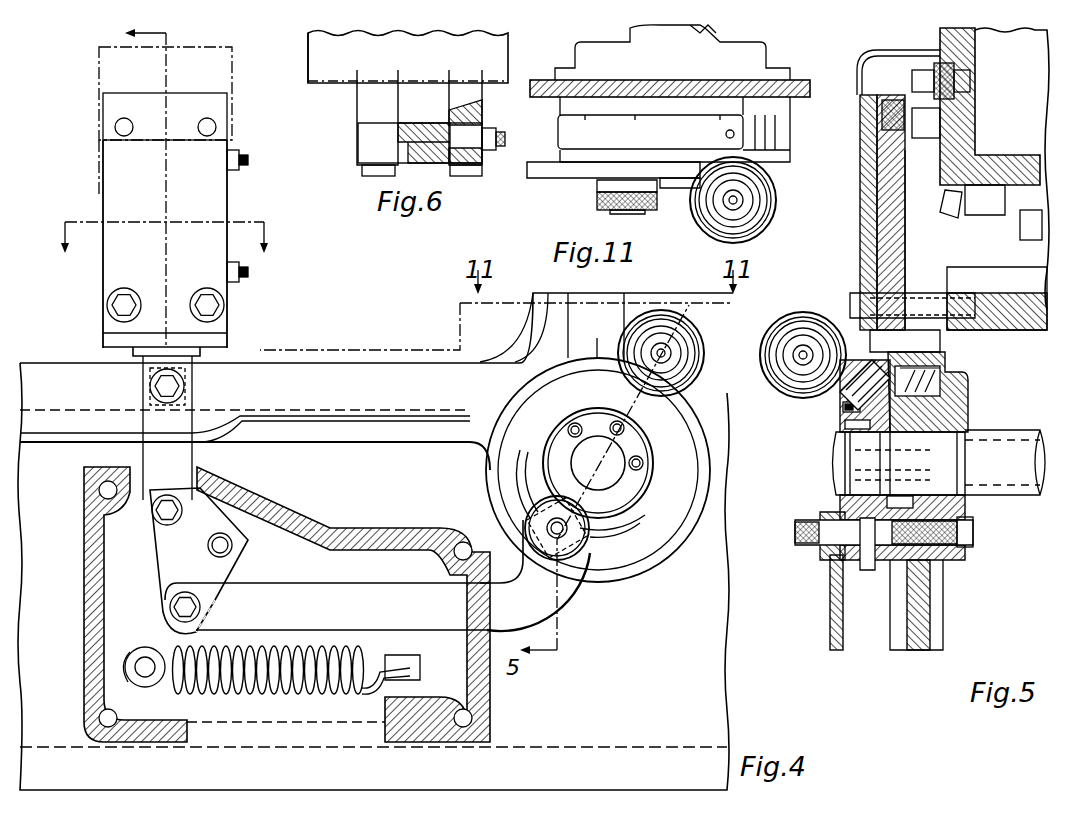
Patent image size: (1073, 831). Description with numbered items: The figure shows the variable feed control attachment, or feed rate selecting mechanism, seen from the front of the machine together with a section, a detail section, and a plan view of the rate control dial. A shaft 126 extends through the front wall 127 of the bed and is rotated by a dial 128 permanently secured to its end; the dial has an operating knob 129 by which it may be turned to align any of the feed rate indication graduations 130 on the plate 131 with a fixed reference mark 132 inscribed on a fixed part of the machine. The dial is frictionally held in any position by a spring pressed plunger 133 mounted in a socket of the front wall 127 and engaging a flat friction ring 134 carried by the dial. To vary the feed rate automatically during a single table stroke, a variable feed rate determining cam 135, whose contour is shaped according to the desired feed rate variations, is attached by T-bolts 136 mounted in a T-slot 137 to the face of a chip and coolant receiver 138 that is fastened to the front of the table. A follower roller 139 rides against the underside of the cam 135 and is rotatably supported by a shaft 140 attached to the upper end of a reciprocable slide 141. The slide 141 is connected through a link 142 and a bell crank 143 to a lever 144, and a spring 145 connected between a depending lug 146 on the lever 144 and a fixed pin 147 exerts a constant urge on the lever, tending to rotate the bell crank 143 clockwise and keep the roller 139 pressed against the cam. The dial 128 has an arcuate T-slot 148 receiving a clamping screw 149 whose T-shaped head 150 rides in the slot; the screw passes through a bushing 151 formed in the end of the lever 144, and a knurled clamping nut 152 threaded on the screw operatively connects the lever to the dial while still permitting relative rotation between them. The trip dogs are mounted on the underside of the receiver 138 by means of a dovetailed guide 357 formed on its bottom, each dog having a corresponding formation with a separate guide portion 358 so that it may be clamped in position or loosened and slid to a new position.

In FIG. 4, the shaft 126 is at (612, 478).
In FIG. 11, the shaft 126 is at (720, 30).
In FIG. 5, the shaft 126 is at (1020, 420).
In FIG. 5, the front wall 127 is at (925, 620).
In FIG. 4, the dial 128 is at (604, 558).
In FIG. 11, the dial 128 is at (775, 138).
In FIG. 5, the dial 128 is at (850, 400).
In FIG. 4, the operating knob 129 is at (660, 318).
In FIG. 11, the operating knob 129 is at (722, 225).
In FIG. 5, the operating knob 129 is at (798, 315).
In FIG. 11, the feed rate indication graduations 130 is at (590, 107).
In FIG. 11, the plate 131 is at (592, 150).
In FIG. 4, the fixed reference mark 132 is at (597, 340).
In FIG. 11, the fixed reference mark 132 is at (664, 112).
In FIG. 5, the spring pressed plunger 133 is at (935, 355).
In FIG. 5, the friction ring 134 is at (850, 425).
In FIG. 5, the variable feed rate determining cam 135 is at (930, 70).
In FIG. 5, the T-bolts 136 is at (915, 78).
In FIG. 5, the T-slot 137 is at (910, 100).
In FIG. 5, the chip and coolant receiver 138 is at (990, 160).
In FIG. 5, the follower roller 139 is at (890, 165).
In FIG. 5, the shaft 140 is at (905, 152).
In FIG. 4, the reciprocable slide 141 is at (140, 363).
In FIG. 6, the reciprocable slide 141 is at (393, 135).
In FIG. 5, the reciprocable slide 141 is at (870, 192).
In FIG. 4, the link 142 is at (186, 455).
In FIG. 4, the bell crank 143 is at (167, 558).
In FIG. 4, the lever 144 is at (568, 592).
In FIG. 5, the lever 144 is at (830, 625).
In FIG. 4, the spring 145 is at (292, 681).
In FIG. 4, the depending lug 146 is at (407, 676).
In FIG. 4, the fixed pin 147 is at (132, 667).
In FIG. 4, the arcuate T-slot 148 is at (632, 528).
In FIG. 5, the arcuate T-slot 148 is at (890, 580).
In FIG. 4, the clamping screw 149 is at (548, 522).
In FIG. 5, the clamping screw 149 is at (795, 530).
In FIG. 5, the T-shaped head 150 is at (867, 570).
In FIG. 5, the bushing 151 is at (840, 510).
In FIG. 4, the knurled clamping nut 152 is at (572, 560).
In FIG. 5, the knurled clamping nut 152 is at (833, 512).
In FIG. 5, the dovetailed guide 357 is at (1000, 215).
In FIG. 5, the guide portion 358 is at (950, 218).